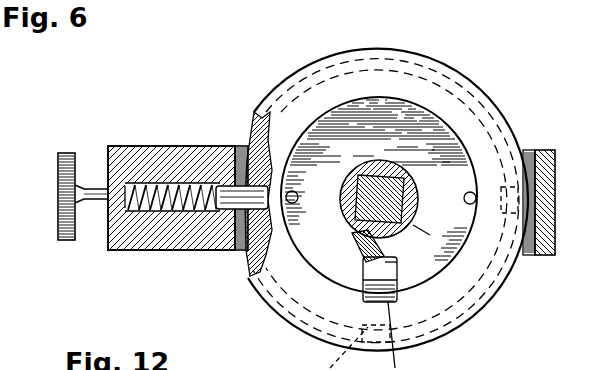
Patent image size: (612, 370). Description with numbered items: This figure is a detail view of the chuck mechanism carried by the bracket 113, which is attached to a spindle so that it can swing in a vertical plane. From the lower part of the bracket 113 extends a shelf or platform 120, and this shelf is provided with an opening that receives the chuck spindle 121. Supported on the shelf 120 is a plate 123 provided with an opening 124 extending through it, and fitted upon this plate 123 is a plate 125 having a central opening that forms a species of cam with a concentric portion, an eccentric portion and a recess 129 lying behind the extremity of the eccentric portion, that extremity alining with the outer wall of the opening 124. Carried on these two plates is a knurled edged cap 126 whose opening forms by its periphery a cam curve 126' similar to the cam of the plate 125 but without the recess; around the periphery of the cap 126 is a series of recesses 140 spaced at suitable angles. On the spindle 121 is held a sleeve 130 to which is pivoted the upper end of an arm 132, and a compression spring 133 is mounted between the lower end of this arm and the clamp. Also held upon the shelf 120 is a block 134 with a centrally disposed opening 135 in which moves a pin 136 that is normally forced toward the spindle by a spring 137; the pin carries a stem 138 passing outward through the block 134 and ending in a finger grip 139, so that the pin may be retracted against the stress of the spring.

The bracket 113 is at (557, 213).
The shelf or platform 120 is at (538, 192).
The chuck spindle 121 is at (398, 190).
The plate 123 is at (379, 195).
The opening 124 is at (397, 262).
The plate 125 is at (272, 145).
The knurled edged cap 126 is at (388, 208).
The cam curve 126' is at (505, 285).
The recess 129 is at (363, 282).
The sleeve 130 is at (435, 241).
The arm 132 is at (347, 264).
The compression spring 133 is at (393, 279).
The block 134 is at (178, 240).
The opening 135 is at (163, 187).
The pin 136 is at (238, 222).
The spring 137 is at (136, 212).
The stem 138 is at (92, 203).
The finger grip 139 is at (60, 197).
The recesses 140 is at (246, 150).